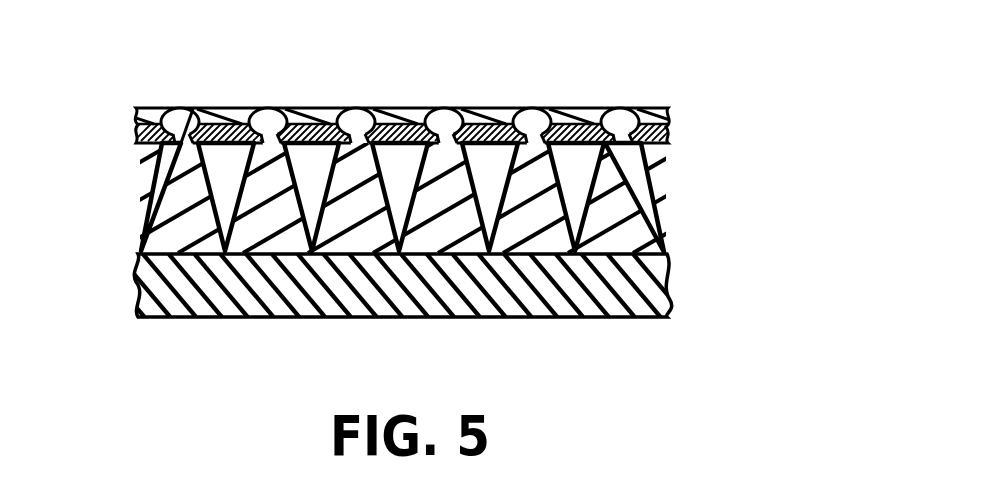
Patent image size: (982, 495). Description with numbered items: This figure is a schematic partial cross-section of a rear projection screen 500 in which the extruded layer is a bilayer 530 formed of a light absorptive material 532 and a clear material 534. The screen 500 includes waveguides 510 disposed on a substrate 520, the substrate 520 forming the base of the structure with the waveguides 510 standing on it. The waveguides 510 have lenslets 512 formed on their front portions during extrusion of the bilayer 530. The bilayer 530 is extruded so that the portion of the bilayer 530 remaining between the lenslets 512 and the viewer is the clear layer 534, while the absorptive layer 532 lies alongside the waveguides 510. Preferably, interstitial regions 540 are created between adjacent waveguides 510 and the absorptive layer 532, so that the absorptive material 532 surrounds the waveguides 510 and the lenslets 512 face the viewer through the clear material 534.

The screen 500 is at (718, 115).
The waveguides 510 is at (634, 206).
The lenslets 512 is at (180, 118).
The substrate 520 is at (633, 300).
The bilayer 530 is at (113, 107).
The light absorptive material 532 is at (573, 128).
The clear material 534 is at (498, 110).
The interstitial regions 540 is at (406, 165).